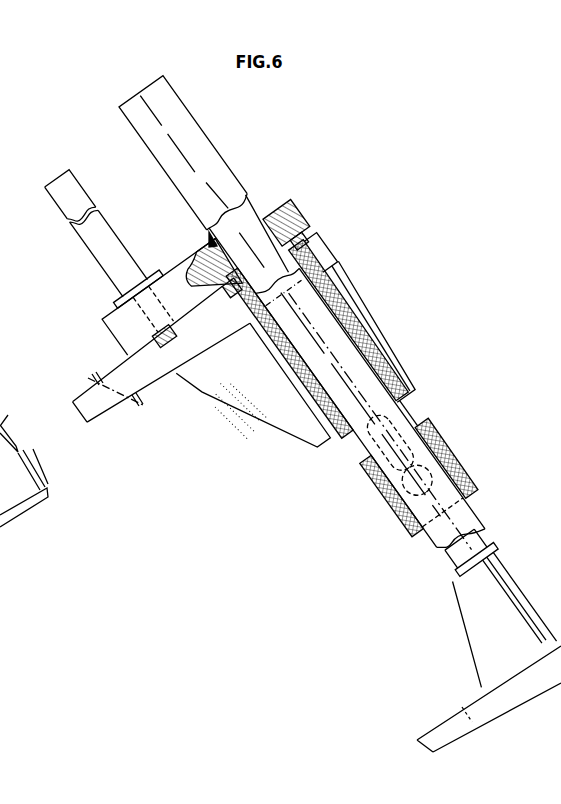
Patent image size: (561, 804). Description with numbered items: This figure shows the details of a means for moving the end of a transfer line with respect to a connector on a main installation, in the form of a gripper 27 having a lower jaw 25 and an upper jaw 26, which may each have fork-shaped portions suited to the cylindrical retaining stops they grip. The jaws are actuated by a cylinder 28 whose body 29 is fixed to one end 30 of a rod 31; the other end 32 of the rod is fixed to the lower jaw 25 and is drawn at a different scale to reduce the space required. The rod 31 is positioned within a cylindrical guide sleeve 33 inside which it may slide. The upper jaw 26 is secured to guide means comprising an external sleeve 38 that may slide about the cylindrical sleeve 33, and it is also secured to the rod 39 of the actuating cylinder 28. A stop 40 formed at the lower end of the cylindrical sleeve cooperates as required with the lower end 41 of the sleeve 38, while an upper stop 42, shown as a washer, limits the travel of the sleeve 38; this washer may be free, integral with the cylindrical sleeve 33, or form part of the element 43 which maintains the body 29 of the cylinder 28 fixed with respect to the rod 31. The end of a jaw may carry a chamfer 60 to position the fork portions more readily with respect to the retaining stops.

The lower jaw 25 is at (464, 703).
The upper jaw 26 is at (157, 374).
The gripper 27 is at (407, 226).
The cylinder 28 is at (88, 281).
The body of cylinder 29 is at (103, 248).
The end of rod 30 is at (172, 160).
The rod 31 is at (464, 507).
The second end of rod 32 is at (464, 557).
The cylindrical guide sleeve 33 is at (421, 399).
The external sleeve 38 is at (374, 337).
The rod of actuating cylinder 39 is at (181, 328).
The stop 40 is at (431, 417).
The lower end of sleeve 41 is at (340, 442).
The upper stop 42 is at (300, 240).
The element maintaining cylinder body fixed to rod 43 is at (296, 200).
The chamfer 60 is at (109, 400).